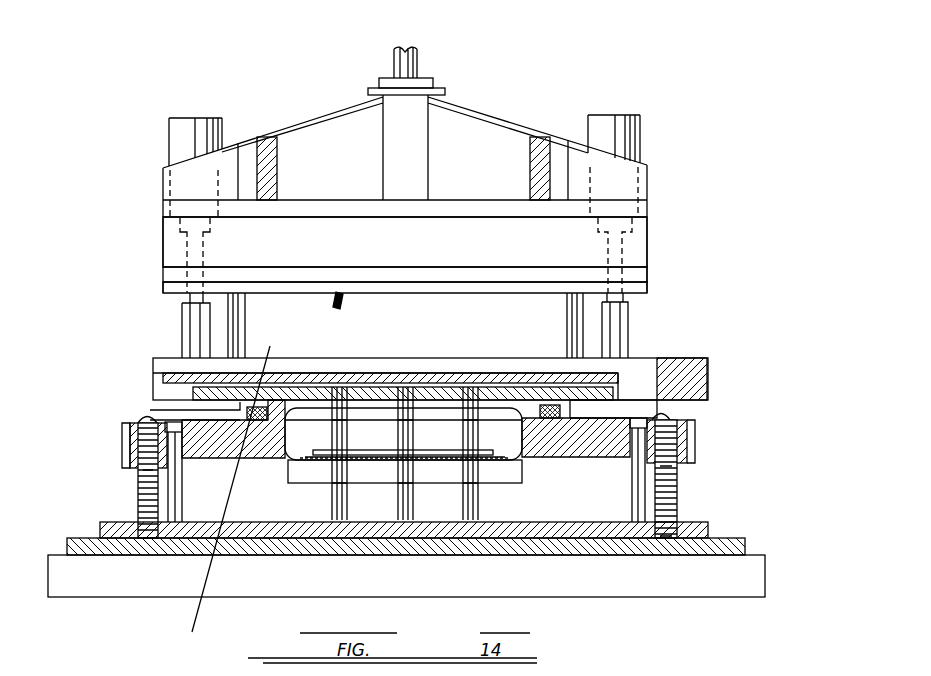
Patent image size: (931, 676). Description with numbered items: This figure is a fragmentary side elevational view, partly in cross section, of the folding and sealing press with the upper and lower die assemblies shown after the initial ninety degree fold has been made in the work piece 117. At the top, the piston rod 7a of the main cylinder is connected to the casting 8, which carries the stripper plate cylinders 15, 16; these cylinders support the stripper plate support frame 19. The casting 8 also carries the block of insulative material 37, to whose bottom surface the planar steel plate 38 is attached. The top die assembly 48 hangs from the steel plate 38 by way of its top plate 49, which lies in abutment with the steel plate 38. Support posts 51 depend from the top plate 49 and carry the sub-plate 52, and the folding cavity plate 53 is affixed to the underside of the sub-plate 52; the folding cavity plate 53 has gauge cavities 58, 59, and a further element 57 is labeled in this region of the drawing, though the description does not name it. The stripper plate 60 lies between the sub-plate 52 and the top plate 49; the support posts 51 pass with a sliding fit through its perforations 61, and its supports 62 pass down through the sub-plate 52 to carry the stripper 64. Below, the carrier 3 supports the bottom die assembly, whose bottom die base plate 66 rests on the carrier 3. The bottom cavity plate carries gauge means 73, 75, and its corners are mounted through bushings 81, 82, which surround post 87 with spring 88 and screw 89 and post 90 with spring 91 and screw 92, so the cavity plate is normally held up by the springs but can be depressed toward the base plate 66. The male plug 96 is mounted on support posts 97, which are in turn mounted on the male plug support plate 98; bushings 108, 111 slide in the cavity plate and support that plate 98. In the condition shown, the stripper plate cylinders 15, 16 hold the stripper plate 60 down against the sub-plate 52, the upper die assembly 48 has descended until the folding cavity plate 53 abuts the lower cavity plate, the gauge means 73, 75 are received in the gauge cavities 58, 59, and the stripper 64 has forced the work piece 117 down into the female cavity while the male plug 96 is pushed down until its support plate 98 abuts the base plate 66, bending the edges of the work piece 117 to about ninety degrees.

The carrier 3 is at (107, 583).
The piston rod 7a is at (417, 60).
The casting 8 is at (470, 130).
The stripper plate cylinder 15 is at (199, 128).
The stripper plate cylinder 16 is at (615, 130).
The stripper plate support frame 19 is at (693, 358).
The block of insulative material 37 is at (414, 256).
The planar steel plate 38 is at (460, 272).
The top die assembly 48 is at (334, 309).
The top plate 49 is at (478, 290).
The support posts 51 is at (237, 320).
The sub-plate 52 is at (193, 393).
The folding cavity plate 53 is at (240, 410).
The pin 57 is at (502, 400).
The gauge cavity 58 is at (192, 632).
The gauge cavity 59 is at (570, 412).
The stripper plate 60 is at (280, 425).
The perforations 61 is at (340, 388).
The supports 62 is at (397, 433).
The stripper 64 is at (362, 452).
The bottom die base plate 66 is at (745, 544).
The gauge means 73 is at (231, 497).
The gauge means 75 is at (550, 418).
The bushing 81 is at (167, 447).
The bushing 82 is at (687, 442).
The post 87 is at (136, 492).
The spring 88 is at (136, 510).
The screw 89 is at (135, 418).
The post 90 is at (678, 483).
The spring 91 is at (677, 472).
The screw 92 is at (672, 413).
The male plug 96 is at (293, 473).
The support posts 97 is at (332, 507).
The male plug support plate 98 is at (710, 522).
The bushing 108 is at (177, 487).
The bushing 111 is at (635, 488).
The work piece 117 is at (522, 438).